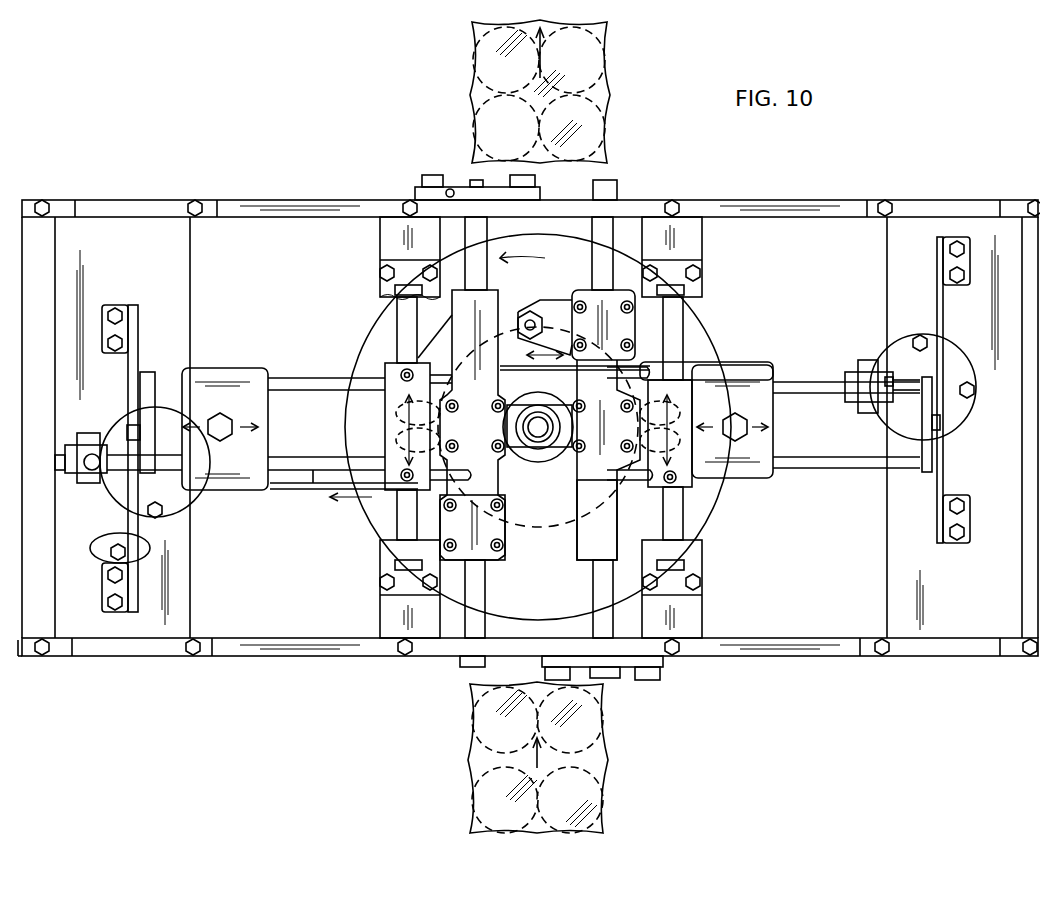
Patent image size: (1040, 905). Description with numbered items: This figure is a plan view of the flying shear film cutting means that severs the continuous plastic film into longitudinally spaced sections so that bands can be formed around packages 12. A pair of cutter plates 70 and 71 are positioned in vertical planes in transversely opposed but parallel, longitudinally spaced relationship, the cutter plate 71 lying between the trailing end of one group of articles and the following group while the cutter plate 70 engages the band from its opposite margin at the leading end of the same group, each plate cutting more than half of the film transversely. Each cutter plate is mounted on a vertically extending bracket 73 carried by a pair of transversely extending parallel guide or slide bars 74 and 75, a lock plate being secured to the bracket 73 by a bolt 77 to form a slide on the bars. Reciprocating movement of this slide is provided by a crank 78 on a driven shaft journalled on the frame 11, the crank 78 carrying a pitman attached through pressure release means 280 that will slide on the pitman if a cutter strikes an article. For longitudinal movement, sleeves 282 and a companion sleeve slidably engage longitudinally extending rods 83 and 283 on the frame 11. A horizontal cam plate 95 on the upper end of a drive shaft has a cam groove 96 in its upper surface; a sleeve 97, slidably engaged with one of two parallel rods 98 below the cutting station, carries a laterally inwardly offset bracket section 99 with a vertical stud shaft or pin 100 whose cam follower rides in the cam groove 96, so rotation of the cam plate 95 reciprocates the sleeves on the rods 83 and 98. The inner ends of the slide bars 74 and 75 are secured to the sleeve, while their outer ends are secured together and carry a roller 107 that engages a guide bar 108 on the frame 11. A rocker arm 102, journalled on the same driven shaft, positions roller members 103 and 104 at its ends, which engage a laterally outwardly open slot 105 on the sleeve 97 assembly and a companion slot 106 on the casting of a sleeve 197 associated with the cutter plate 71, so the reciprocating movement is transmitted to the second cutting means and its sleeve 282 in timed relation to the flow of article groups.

The frame 11 is at (808, 200).
The bag 12 is at (600, 98).
The cutter plate 70 is at (545, 367).
The cutter plate 71 is at (318, 497).
The bracket 73 is at (238, 376).
The guide or slide bar 74 is at (800, 394).
The guide or slide bar 75 is at (830, 457).
The bolt 77 is at (741, 421).
The crank 78 is at (890, 367).
The rod 83 is at (700, 517).
The cam plate 95 is at (700, 340).
The cam groove 96 is at (505, 533).
The sleeve 97 is at (590, 562).
The rod or bar 98 is at (476, 605).
The bracket section 99 is at (560, 300).
The stud shaft or pin 100 is at (530, 312).
The rocker arm 102 is at (565, 450).
The roller member 103 is at (700, 480).
The roller member 104 is at (400, 437).
The slot 105 is at (610, 470).
The companion slot 106 is at (400, 414).
The roller 107 is at (945, 425).
The guide bar 108 is at (945, 460).
The sleeve 197 is at (500, 545).
The means 280 is at (860, 366).
The sleeve 282 is at (392, 362).
The rod 283 is at (400, 328).